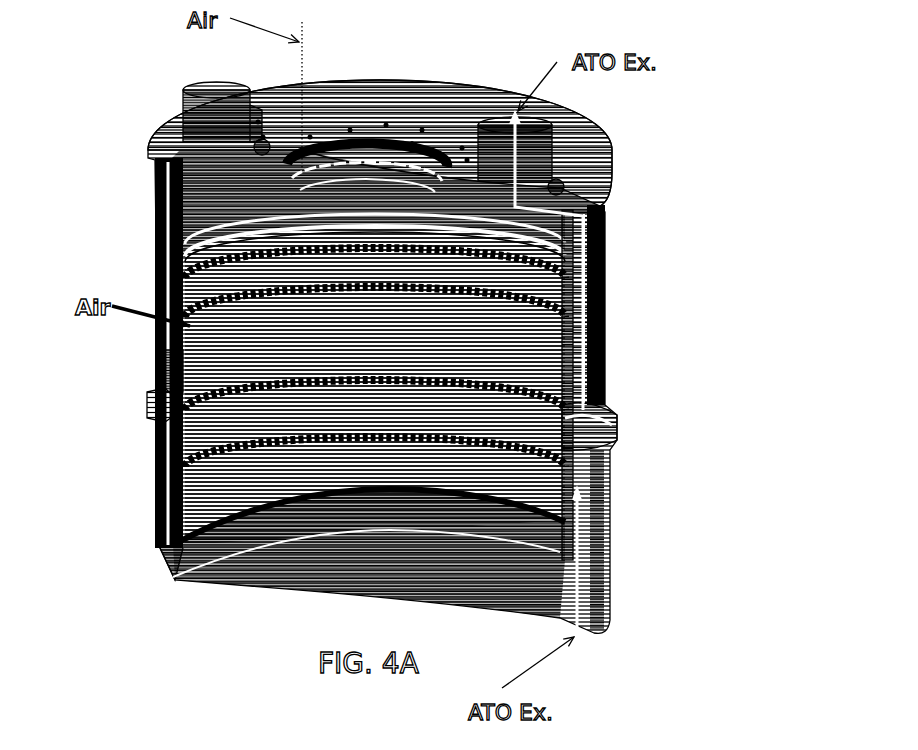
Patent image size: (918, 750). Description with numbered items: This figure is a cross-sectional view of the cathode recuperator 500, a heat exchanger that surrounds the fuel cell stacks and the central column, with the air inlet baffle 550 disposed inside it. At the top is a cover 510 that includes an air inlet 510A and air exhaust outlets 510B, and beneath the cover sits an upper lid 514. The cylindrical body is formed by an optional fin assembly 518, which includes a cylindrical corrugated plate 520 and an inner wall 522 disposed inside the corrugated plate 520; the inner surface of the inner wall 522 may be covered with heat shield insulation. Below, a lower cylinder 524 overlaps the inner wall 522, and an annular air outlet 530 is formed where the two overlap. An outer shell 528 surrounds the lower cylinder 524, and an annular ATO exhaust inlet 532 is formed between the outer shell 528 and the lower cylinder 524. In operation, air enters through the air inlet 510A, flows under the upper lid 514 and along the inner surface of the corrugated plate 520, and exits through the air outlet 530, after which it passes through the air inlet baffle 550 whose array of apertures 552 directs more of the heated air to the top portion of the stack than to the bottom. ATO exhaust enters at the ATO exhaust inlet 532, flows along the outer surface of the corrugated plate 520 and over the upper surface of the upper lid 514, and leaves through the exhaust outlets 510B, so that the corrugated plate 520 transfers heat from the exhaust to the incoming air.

The cathode recuperator 500 is at (716, 57).
The cover 510 is at (581, 176).
The air inlet 510A is at (346, 134).
The air exhaust outlets 510B is at (556, 142).
The upper lid 514 is at (186, 163).
The fin assembly 518 is at (678, 305).
The corrugated plate 520 is at (700, 215).
The inner wall 522 is at (243, 201).
The lower cylinder 524 is at (228, 541).
The outer shell 528 is at (608, 540).
The air outlet 530 is at (154, 407).
The ATO exhaust inlet 532 is at (165, 554).
The air inlet baffle 550 is at (412, 348).
The apertures 552 is at (302, 302).